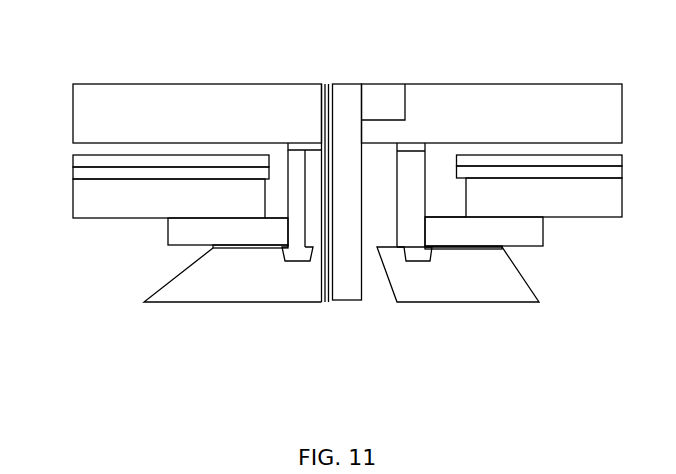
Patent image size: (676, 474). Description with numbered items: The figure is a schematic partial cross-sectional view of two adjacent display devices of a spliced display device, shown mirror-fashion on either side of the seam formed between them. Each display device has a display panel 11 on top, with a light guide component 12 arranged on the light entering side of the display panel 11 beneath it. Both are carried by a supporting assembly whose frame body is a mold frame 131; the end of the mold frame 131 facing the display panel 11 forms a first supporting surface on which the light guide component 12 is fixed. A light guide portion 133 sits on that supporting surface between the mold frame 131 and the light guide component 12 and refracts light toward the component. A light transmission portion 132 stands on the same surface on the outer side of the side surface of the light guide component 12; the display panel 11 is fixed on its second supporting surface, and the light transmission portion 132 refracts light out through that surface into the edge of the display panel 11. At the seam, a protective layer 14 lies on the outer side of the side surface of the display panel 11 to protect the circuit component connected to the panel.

The display panel 11 is at (132, 100).
The light guide component 12 is at (92, 193).
The protective layer 14 is at (342, 98).
The mold frame 131 is at (228, 290).
The light transmission portion 132 is at (300, 187).
The light guide portion 133 is at (185, 229).